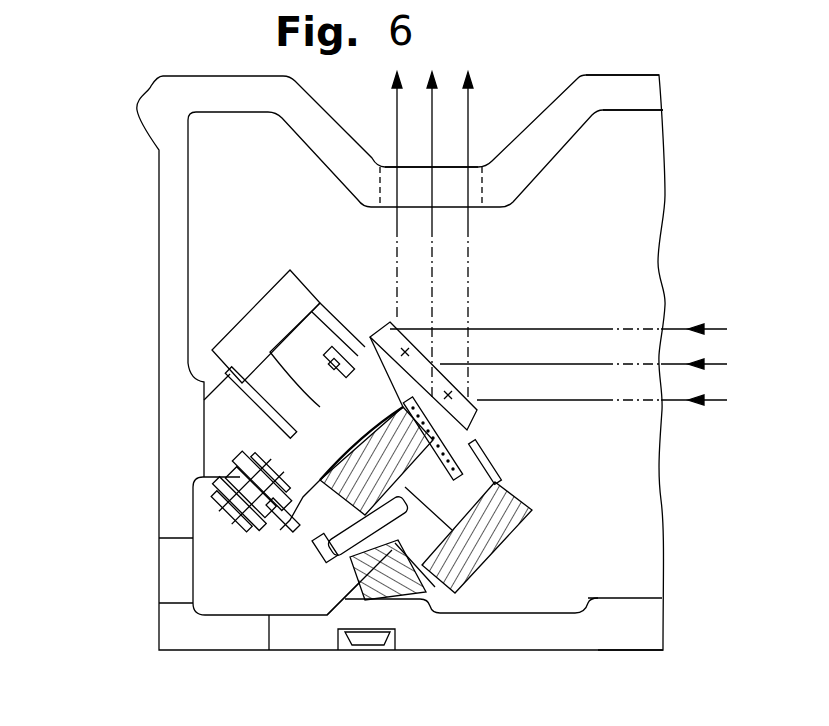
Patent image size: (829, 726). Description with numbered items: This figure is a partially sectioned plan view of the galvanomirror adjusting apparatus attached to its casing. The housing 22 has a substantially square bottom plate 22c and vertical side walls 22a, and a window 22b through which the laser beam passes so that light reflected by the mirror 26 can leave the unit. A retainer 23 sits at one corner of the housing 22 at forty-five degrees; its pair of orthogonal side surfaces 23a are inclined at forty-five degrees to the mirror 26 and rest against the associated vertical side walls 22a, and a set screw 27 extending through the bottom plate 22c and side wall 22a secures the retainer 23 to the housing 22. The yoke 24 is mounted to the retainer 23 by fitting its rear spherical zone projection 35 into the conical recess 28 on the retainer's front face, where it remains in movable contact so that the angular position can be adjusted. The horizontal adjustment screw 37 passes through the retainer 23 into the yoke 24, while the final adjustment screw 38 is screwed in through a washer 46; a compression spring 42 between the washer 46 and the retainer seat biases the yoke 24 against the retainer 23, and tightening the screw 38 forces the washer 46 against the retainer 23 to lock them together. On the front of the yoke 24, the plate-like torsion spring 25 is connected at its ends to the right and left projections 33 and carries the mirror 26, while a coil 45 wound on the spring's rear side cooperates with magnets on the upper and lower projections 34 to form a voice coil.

The housing 22 is at (672, 148).
The vertical side walls 22a is at (598, 95).
The window 22b is at (480, 185).
The bottom plate 22c is at (607, 582).
The retainer 23 is at (430, 605).
The side surfaces 23a is at (203, 400).
The yoke 24 is at (510, 560).
The torsion spring 25 is at (477, 450).
The mirror 26 is at (477, 417).
The set screw 27 is at (361, 640).
The conical recess 28 is at (284, 530).
The right and left projections 33 is at (268, 300).
The upper and lower projections 34 is at (238, 355).
The spherical zone projection 35 is at (445, 588).
The horizontal adjustment screw 37 is at (398, 612).
The final adjustment screw 38 is at (210, 507).
The compression spring 42 is at (203, 477).
The coil 45 is at (343, 358).
The washer 46 is at (280, 500).